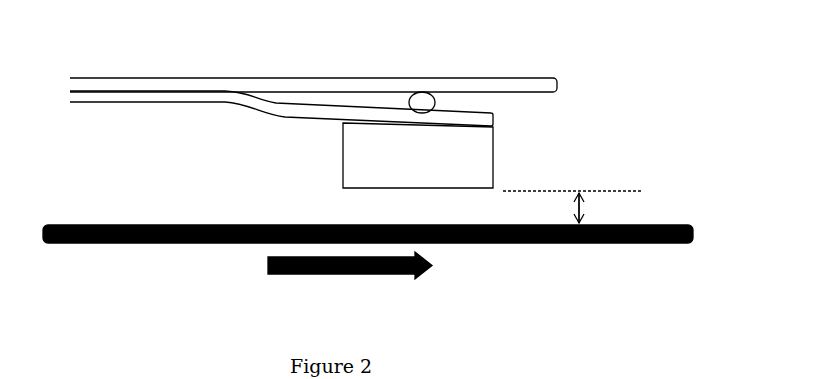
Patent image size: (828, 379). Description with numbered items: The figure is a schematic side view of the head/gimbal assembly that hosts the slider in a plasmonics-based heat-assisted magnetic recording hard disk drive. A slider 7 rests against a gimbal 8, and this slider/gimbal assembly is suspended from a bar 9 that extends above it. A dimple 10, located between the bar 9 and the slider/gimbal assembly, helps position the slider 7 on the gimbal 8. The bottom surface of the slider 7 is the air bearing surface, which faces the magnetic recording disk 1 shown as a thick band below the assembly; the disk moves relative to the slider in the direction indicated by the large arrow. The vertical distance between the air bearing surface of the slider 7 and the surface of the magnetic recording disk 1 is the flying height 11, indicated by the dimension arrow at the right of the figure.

The magnetic recording disk 1 is at (580, 244).
The slider 7 is at (418, 155).
The gimbal 8 is at (230, 112).
The bar 9 is at (353, 63).
The dimple 10 is at (420, 95).
The flying height 11 is at (572, 207).